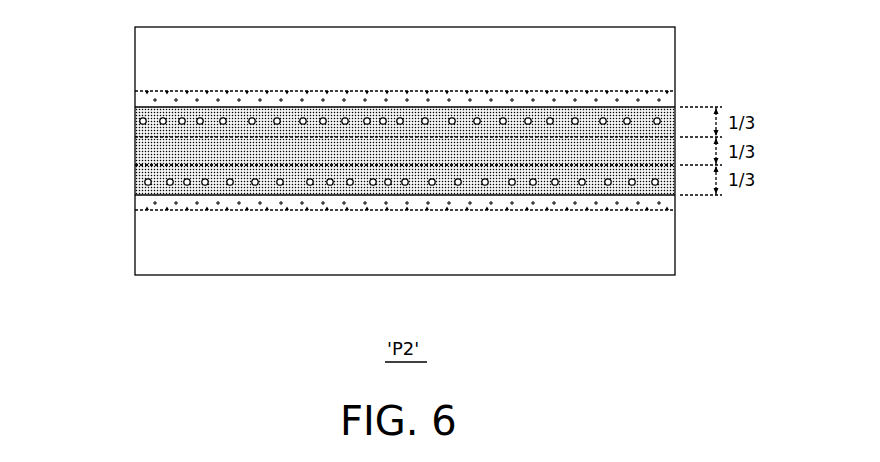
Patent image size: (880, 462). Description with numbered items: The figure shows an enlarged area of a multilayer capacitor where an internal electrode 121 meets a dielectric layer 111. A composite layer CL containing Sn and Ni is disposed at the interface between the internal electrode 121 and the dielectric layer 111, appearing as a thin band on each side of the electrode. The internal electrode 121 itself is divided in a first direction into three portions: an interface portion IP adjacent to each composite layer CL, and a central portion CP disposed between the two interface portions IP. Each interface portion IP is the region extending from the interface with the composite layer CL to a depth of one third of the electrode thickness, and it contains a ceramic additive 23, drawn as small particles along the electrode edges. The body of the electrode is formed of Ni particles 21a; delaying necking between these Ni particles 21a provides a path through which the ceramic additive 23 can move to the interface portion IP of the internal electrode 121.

The dielectric layer 111 is at (141, 63).
The internal electrode 121 is at (86, 116).
The composite layer CL is at (141, 101).
The interface portion IP is at (141, 126).
The central portion CP is at (141, 151).
The Ni particles 21a is at (530, 157).
The ceramic additive 23 is at (632, 185).